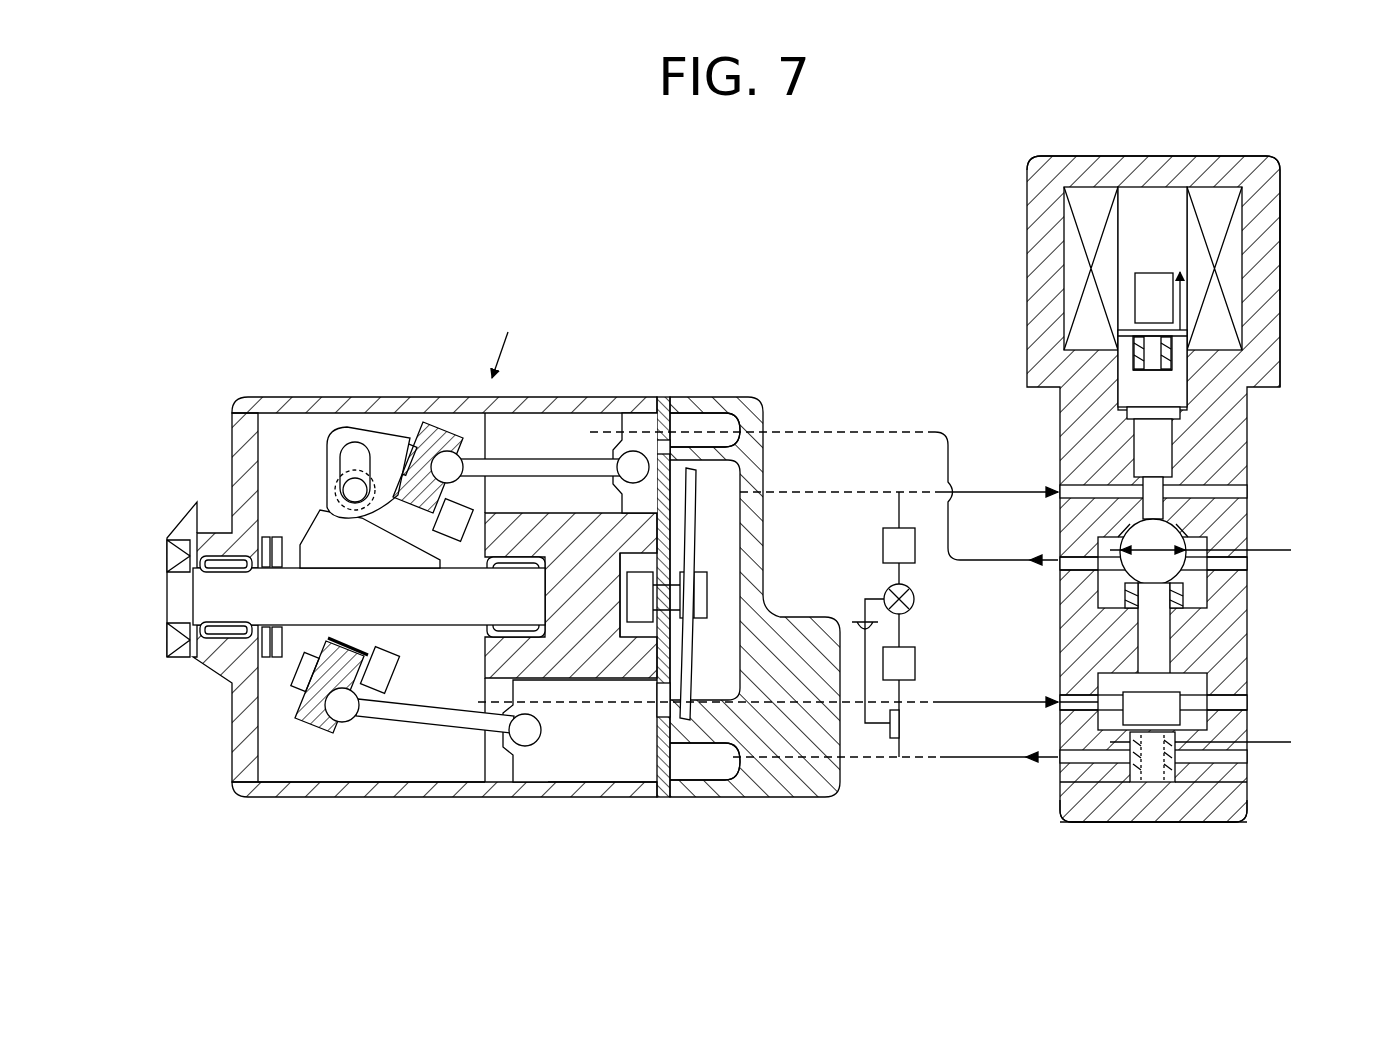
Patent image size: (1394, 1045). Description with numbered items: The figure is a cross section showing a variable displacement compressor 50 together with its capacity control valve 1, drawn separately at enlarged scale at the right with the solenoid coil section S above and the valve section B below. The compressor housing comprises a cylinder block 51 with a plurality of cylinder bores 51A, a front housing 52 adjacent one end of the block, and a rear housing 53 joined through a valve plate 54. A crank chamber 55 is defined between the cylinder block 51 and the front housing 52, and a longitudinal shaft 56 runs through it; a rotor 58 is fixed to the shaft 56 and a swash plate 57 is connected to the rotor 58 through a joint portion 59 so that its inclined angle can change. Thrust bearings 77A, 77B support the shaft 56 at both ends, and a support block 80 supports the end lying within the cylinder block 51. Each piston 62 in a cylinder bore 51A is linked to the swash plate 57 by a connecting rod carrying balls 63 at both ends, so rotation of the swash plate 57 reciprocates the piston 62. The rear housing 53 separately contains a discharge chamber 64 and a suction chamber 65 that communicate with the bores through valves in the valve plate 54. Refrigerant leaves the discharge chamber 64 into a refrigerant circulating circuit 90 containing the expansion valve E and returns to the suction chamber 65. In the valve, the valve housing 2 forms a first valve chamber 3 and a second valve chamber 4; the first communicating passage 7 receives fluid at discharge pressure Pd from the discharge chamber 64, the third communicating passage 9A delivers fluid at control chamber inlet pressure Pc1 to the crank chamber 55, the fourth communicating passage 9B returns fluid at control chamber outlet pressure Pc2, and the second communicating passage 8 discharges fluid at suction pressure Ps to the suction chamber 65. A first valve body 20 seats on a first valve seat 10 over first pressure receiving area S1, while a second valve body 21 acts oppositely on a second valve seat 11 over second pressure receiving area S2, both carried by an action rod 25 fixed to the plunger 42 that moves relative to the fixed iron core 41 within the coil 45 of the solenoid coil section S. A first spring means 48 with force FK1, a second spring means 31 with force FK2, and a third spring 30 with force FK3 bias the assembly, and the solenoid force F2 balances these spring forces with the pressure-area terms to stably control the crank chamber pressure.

The capacity control valve 1 is at (1233, 133).
The valve housing 2 is at (1198, 830).
The first valve chamber 3 is at (1075, 587).
The second valve chamber 4 is at (1100, 800).
The first communicating passage 7 is at (1235, 491).
The second communicating passage 8 is at (1235, 757).
The third communicating passage 9A is at (1235, 563).
The fourth communicating passage 9B is at (1235, 703).
The first valve seat 10 is at (1060, 521).
The second valve seat 11 is at (1080, 720).
The first valve body 20 is at (1168, 578).
The second valve body 21 is at (1182, 690).
The action rod 25 is at (1160, 445).
The third spring 30 is at (1143, 795).
The second spring means 31 is at (1172, 600).
The fixed iron core 41 is at (1140, 205).
The plunger 42 is at (1185, 388).
The coil 45 is at (1225, 210).
The first spring means 48 is at (1175, 366).
The variable displacement compressor 50 is at (488, 326).
The cylinder block 51 is at (557, 411).
The cylinder bore 51A is at (605, 760).
The front housing 52 is at (395, 412).
The rear housing 53 is at (790, 780).
The valve plate 54 is at (663, 414).
The crank chamber 55 is at (387, 760).
The shaft 56 is at (390, 612).
The swash plate 57 is at (307, 717).
The rotor 58 is at (313, 517).
The joint portion 59 is at (347, 432).
The piston 62 is at (630, 414).
The balls 63 is at (447, 460).
The discharge chamber 64 is at (698, 547).
The suction chamber 65 is at (725, 413).
The thrust bearing 77A is at (399, 676).
The thrust bearing 77B is at (227, 628).
The support block 80 is at (633, 672).
The refrigerant circulating circuit 90 is at (913, 520).
The expansion valve E is at (913, 605).
The solenoid force F2 is at (1160, 306).
The urging force of first spring means FK1 is at (1174, 349).
The urging force of second spring means FK2 is at (1180, 604).
The urging force of third spring FK3 is at (1175, 766).
The first pressure receiving area S1 is at (1203, 536).
The second pressure receiving area S2 is at (1203, 728).
The solenoid coil section S is at (1290, 241).
The valve section B is at (1047, 830).
The discharge pressure Pd is at (1022, 465).
The suction pressure Ps is at (1022, 800).
The control chamber inlet pressure Pc1 is at (1020, 538).
The control chamber outlet pressure Pc2 is at (1022, 673).